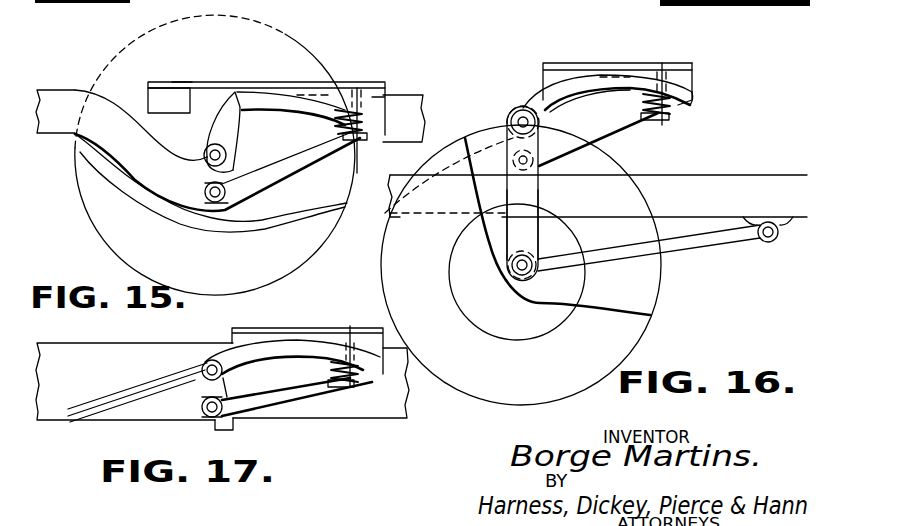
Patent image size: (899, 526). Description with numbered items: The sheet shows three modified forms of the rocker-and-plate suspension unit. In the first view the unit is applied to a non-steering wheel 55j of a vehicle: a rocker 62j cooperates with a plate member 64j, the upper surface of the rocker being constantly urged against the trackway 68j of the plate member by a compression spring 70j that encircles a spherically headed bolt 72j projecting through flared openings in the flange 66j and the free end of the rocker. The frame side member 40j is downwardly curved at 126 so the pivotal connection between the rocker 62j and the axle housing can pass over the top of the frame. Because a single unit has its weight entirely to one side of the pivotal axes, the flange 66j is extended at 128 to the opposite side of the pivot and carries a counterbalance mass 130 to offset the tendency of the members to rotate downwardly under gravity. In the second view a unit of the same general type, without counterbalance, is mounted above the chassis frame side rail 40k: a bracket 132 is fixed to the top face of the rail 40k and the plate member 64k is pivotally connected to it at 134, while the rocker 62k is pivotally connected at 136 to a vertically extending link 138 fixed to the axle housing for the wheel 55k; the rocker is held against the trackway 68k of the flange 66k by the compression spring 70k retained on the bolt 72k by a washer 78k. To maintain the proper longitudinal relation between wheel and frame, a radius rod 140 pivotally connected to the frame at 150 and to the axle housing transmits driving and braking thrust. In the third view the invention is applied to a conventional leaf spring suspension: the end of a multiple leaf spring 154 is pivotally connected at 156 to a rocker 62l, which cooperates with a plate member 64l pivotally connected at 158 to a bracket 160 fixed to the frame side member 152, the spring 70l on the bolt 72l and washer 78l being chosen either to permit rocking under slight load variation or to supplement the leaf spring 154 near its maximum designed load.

In FIG. 15, the frame side member 40j is at (219, 145).
In FIG. 15, the wheel 55j is at (190, 155).
In FIG. 15, the rocker 62j is at (288, 89).
In FIG. 15, the plate member 64j is at (217, 171).
In FIG. 15, the flange 66j is at (266, 61).
In FIG. 15, the trackway 68j is at (400, 96).
In FIG. 15, the compression spring 70j is at (324, 126).
In FIG. 15, the bolt 72j is at (360, 108).
In FIG. 15, the downward curve 126 is at (202, 132).
In FIG. 15, the flange extension 128 is at (160, 67).
In FIG. 15, the counterbalance mass 130 is at (169, 101).
In FIG. 16, the wheel 55k is at (535, 265).
In FIG. 16, the chassis frame side rail 40k is at (597, 185).
In FIG. 16, the rocker 62k is at (608, 70).
In FIG. 16, the plate member 64k is at (590, 107).
In FIG. 16, the flange 66k is at (613, 65).
In FIG. 16, the trackway 68k is at (711, 82).
In FIG. 16, the compression spring 70k is at (687, 112).
In FIG. 16, the bolt 72k is at (675, 77).
In FIG. 16, the washer 78k is at (675, 133).
In FIG. 16, the bracket 132 is at (598, 145).
In FIG. 16, the pivotal connection 134 is at (534, 239).
In FIG. 16, the pivotal connection 136 is at (498, 187).
In FIG. 16, the link 138 is at (552, 223).
In FIG. 16, the radius rod 140 is at (649, 260).
In FIG. 16, the pivotal connection 150 is at (768, 248).
In FIG. 17, the frame side member 152 is at (222, 370).
In FIG. 17, the multiple leaf spring 154 is at (137, 392).
In FIG. 17, the pivotal connection 156 is at (181, 365).
In FIG. 17, the pivotal connection 158 is at (178, 412).
In FIG. 17, the bracket 160 is at (241, 434).
In FIG. 17, the rocker 62l is at (292, 365).
In FIG. 17, the plate member 64l is at (287, 400).
In FIG. 17, the spring 70l is at (322, 367).
In FIG. 17, the bolt 72l is at (328, 343).
In FIG. 17, the washer 78l is at (359, 398).